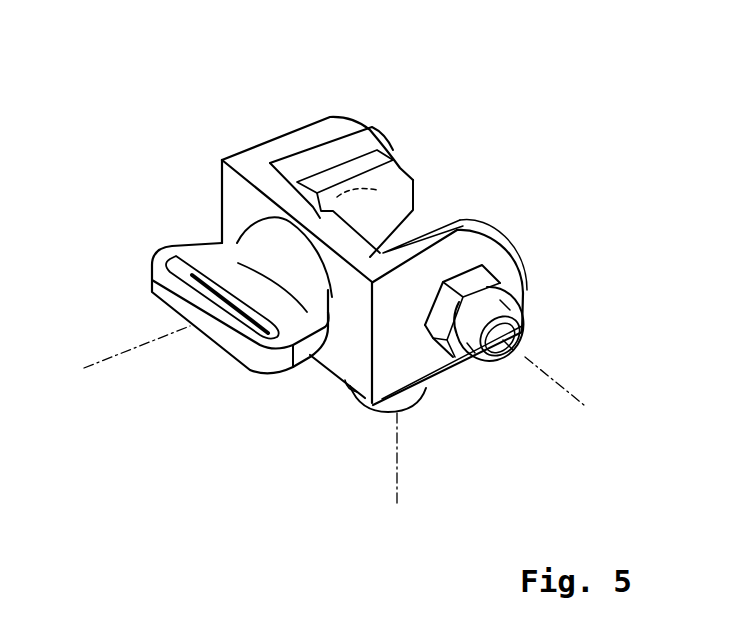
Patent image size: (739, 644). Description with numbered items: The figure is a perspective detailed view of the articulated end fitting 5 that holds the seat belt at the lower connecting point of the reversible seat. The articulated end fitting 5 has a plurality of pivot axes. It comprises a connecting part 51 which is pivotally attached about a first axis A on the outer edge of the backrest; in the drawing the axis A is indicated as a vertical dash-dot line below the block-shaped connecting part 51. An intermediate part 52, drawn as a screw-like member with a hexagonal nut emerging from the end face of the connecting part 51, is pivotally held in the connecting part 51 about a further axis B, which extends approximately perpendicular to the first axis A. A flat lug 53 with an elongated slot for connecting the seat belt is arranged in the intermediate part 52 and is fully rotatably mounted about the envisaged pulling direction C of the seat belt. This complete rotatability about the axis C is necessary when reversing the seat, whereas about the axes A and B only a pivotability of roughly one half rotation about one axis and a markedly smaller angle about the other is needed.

The articulated end fitting 5 is at (266, 94).
The connecting part 51 is at (397, 185).
The intermediate part 52 is at (497, 245).
The flat lug 53 is at (260, 362).
The first axis A is at (371, 463).
The further axis B is at (573, 396).
The pulling direction C is at (113, 361).